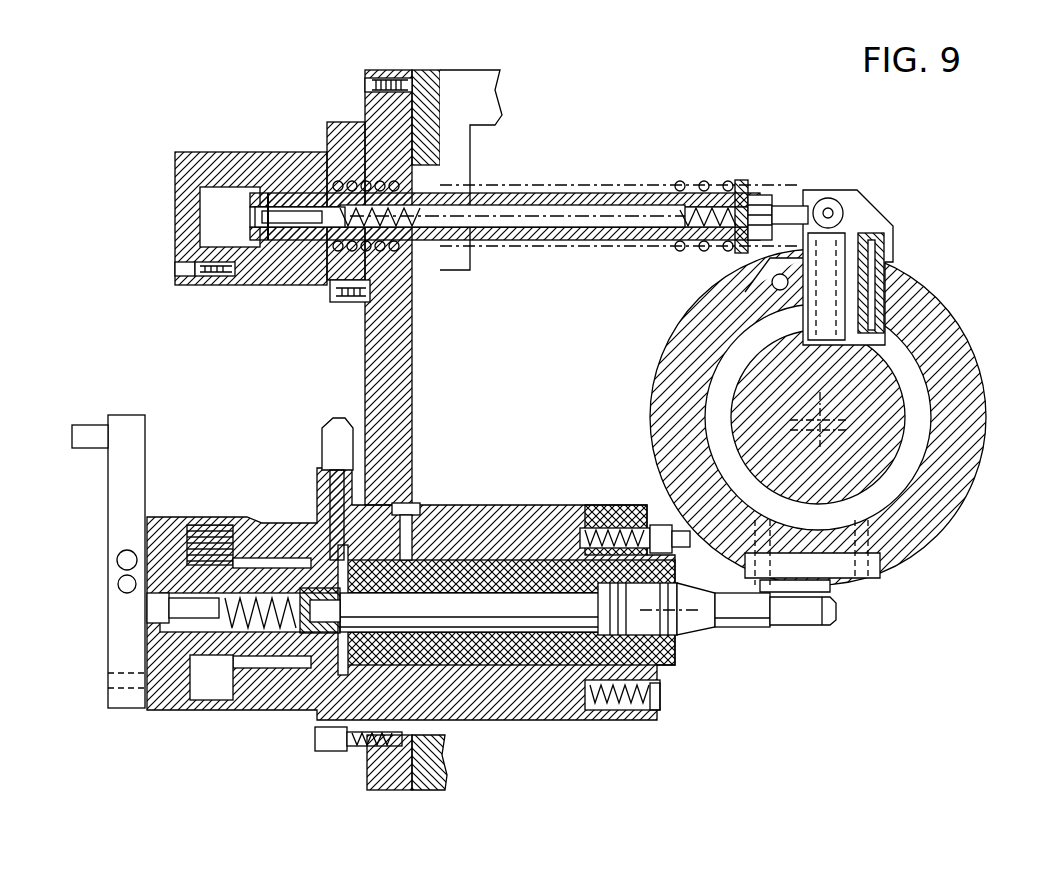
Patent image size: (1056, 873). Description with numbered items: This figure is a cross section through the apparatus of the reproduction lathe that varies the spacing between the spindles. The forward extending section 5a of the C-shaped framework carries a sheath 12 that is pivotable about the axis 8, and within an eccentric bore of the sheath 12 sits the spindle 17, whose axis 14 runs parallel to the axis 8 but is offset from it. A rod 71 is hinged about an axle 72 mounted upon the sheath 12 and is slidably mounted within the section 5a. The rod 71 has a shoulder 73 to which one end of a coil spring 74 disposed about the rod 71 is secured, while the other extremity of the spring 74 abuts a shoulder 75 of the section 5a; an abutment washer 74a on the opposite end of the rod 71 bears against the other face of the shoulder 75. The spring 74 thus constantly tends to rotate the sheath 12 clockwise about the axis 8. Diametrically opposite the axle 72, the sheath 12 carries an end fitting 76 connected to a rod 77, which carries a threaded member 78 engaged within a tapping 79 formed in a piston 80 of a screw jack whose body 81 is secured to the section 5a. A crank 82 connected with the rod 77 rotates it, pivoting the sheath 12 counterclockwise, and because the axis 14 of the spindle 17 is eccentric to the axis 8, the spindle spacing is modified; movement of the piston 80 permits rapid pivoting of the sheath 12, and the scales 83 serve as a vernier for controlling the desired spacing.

The forward extending section 5a is at (370, 352).
The axis 8 is at (822, 412).
The sheath 12 is at (968, 372).
The axis 14 is at (822, 432).
The spindle 17 is at (885, 432).
The rod 71 is at (598, 197).
The axle 72 is at (831, 200).
The shoulder 73 is at (740, 196).
The coil spring 74 is at (538, 183).
The abutment washer 74a is at (282, 195).
The shoulder 75 is at (295, 195).
The end fitting 76 is at (840, 606).
The rod 77 is at (745, 614).
The threaded member 78 is at (690, 635).
The tapping 79 is at (655, 655).
The piston 80 is at (475, 655).
The body 81 is at (512, 705).
The crank 82 is at (116, 425).
The scales 83 is at (250, 522).